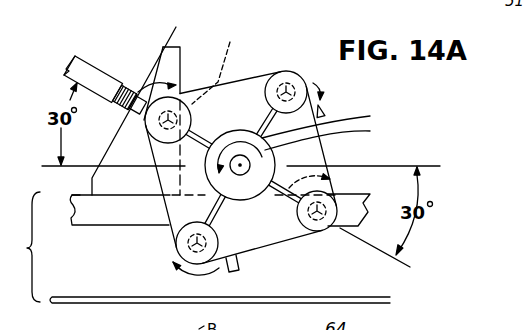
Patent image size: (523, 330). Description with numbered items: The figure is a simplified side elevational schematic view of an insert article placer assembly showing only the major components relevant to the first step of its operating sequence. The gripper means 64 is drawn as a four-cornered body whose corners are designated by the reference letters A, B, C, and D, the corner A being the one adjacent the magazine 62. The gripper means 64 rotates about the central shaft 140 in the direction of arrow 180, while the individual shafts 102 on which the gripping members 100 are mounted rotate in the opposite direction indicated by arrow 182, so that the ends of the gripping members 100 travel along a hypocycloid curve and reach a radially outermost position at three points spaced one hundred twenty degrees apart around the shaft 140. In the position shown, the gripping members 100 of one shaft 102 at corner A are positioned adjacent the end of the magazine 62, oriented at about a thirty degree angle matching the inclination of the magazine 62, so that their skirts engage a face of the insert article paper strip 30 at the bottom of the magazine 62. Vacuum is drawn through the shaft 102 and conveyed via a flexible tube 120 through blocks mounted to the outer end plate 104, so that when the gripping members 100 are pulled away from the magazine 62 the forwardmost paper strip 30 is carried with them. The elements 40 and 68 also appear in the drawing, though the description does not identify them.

The insert article 30 is at (140, 88).
The magazine 62 is at (105, 90).
The gripping member 100 is at (134, 109).
The arrow 182 is at (144, 99).
The shaft 102 is at (218, 64).
The gripper means 64 is at (239, 79).
The flexible tube 120 is at (246, 80).
The shaft 140 is at (262, 160).
The outer end plate 104 is at (333, 137).
The arrow 180 is at (332, 121).
The base plate 40 is at (313, 297).
The lower member 68 is at (131, 324).
The corner A is at (153, 146).
The corner B is at (303, 77).
The corner C is at (319, 233).
The corner D is at (177, 252).